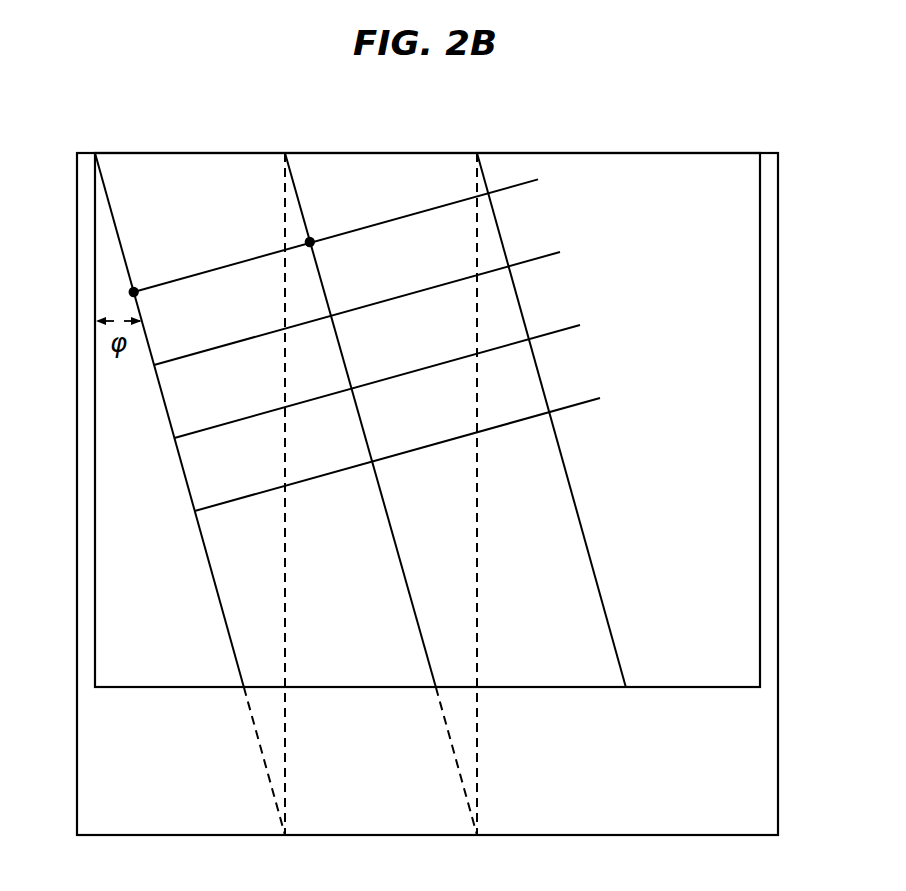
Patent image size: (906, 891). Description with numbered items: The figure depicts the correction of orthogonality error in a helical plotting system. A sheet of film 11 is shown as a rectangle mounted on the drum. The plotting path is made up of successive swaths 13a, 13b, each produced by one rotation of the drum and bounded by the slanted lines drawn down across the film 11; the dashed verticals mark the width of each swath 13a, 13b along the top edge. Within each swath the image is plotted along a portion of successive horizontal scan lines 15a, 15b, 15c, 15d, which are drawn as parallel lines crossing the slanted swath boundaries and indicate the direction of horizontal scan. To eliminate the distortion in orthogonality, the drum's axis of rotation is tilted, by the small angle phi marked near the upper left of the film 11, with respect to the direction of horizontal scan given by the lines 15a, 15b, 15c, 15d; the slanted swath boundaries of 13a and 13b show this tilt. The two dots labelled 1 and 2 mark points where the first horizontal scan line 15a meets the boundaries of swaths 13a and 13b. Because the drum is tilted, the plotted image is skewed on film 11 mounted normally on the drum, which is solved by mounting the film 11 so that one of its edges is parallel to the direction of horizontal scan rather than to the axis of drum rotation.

The film 11 is at (95, 489).
The swath 13a is at (285, 152).
The swath 13b is at (477, 152).
The horizontal scan line 15a is at (522, 181).
The horizontal scan line 15b is at (539, 258).
The horizontal scan line 15c is at (552, 333).
The fourth line 15d is at (576, 404).
The first point 1 is at (137, 289).
The second point 2 is at (311, 239).